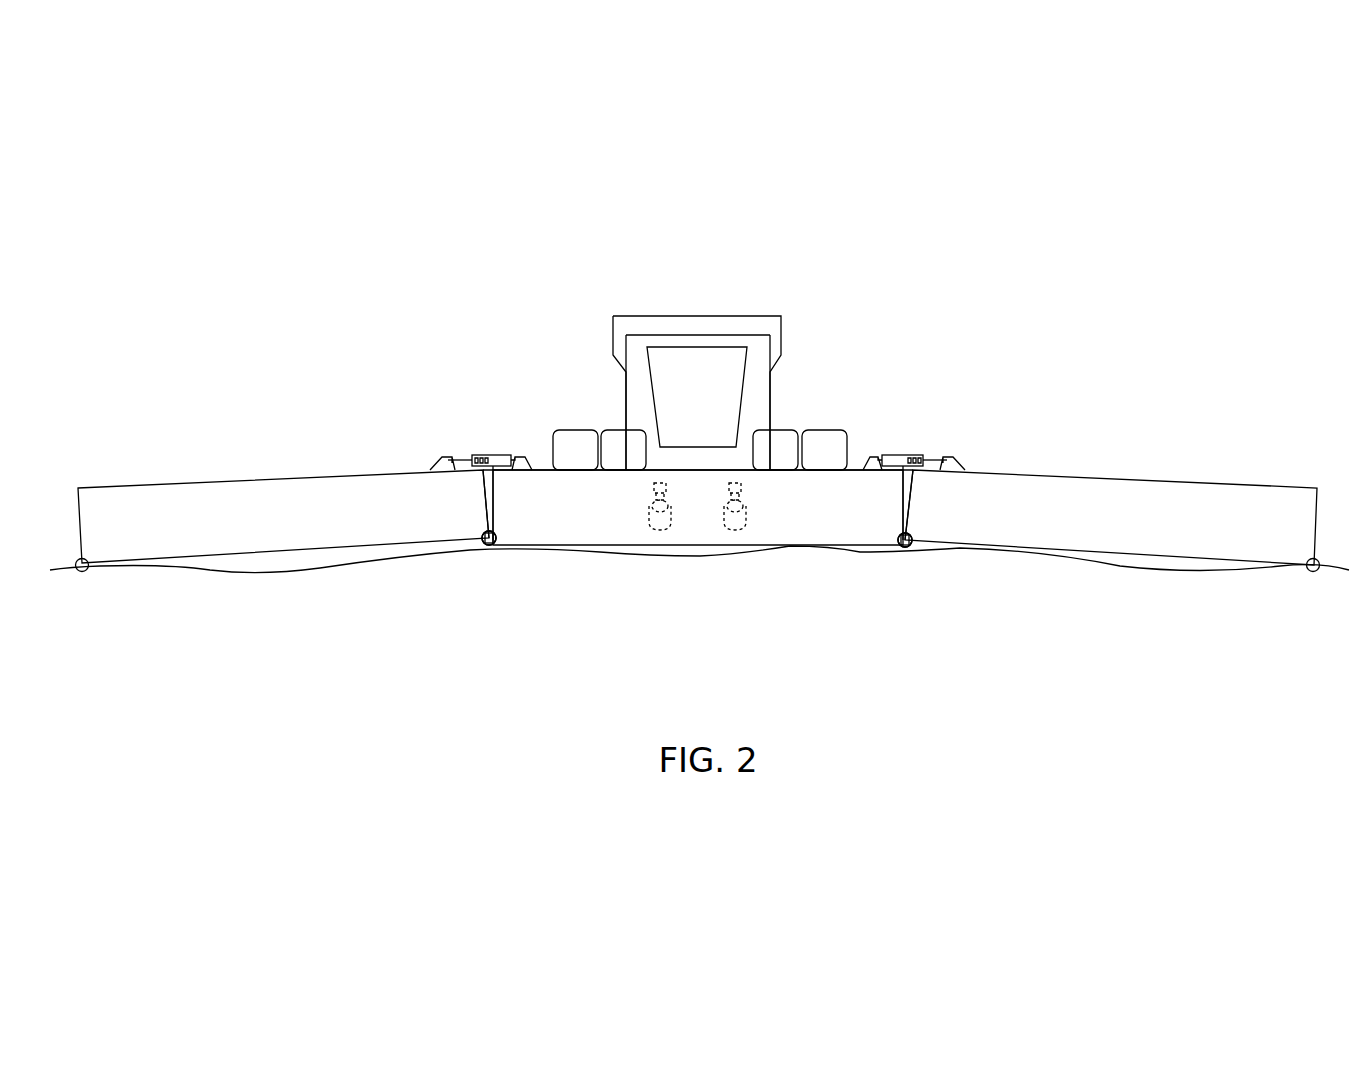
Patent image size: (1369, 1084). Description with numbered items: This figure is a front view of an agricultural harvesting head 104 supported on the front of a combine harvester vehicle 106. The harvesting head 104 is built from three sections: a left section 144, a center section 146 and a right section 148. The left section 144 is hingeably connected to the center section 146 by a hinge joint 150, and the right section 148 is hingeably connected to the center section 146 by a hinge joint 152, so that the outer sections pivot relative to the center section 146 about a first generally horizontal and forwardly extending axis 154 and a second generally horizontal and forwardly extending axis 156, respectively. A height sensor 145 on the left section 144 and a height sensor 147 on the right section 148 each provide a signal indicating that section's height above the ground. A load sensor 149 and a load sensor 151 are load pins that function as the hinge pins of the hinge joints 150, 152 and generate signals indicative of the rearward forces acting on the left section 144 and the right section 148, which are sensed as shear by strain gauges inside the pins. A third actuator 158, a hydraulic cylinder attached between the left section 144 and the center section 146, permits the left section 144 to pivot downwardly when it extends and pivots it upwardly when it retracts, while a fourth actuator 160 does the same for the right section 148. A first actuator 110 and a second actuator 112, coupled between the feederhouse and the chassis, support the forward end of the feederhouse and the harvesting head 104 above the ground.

The agricultural harvesting head 104 is at (1060, 318).
The combine harvester vehicle 106 is at (714, 316).
The center section 146 is at (685, 470).
The right section 148 is at (197, 482).
The left section 144 is at (1140, 484).
The height sensor 147 is at (86, 571).
The height sensor 145 is at (1311, 571).
The fourth actuator 160 is at (490, 456).
The third actuator 158 is at (898, 455).
The second generally horizontal and forwardly extending axis 156 is at (483, 535).
The first generally horizontal and forwardly extending axis 154 is at (910, 534).
The load sensor 151 is at (495, 536).
The load sensor 149 is at (900, 536).
The hinge joint 152 is at (487, 546).
The hinge joint 150 is at (908, 548).
The second actuator 112 is at (652, 522).
The first actuator 110 is at (743, 522).